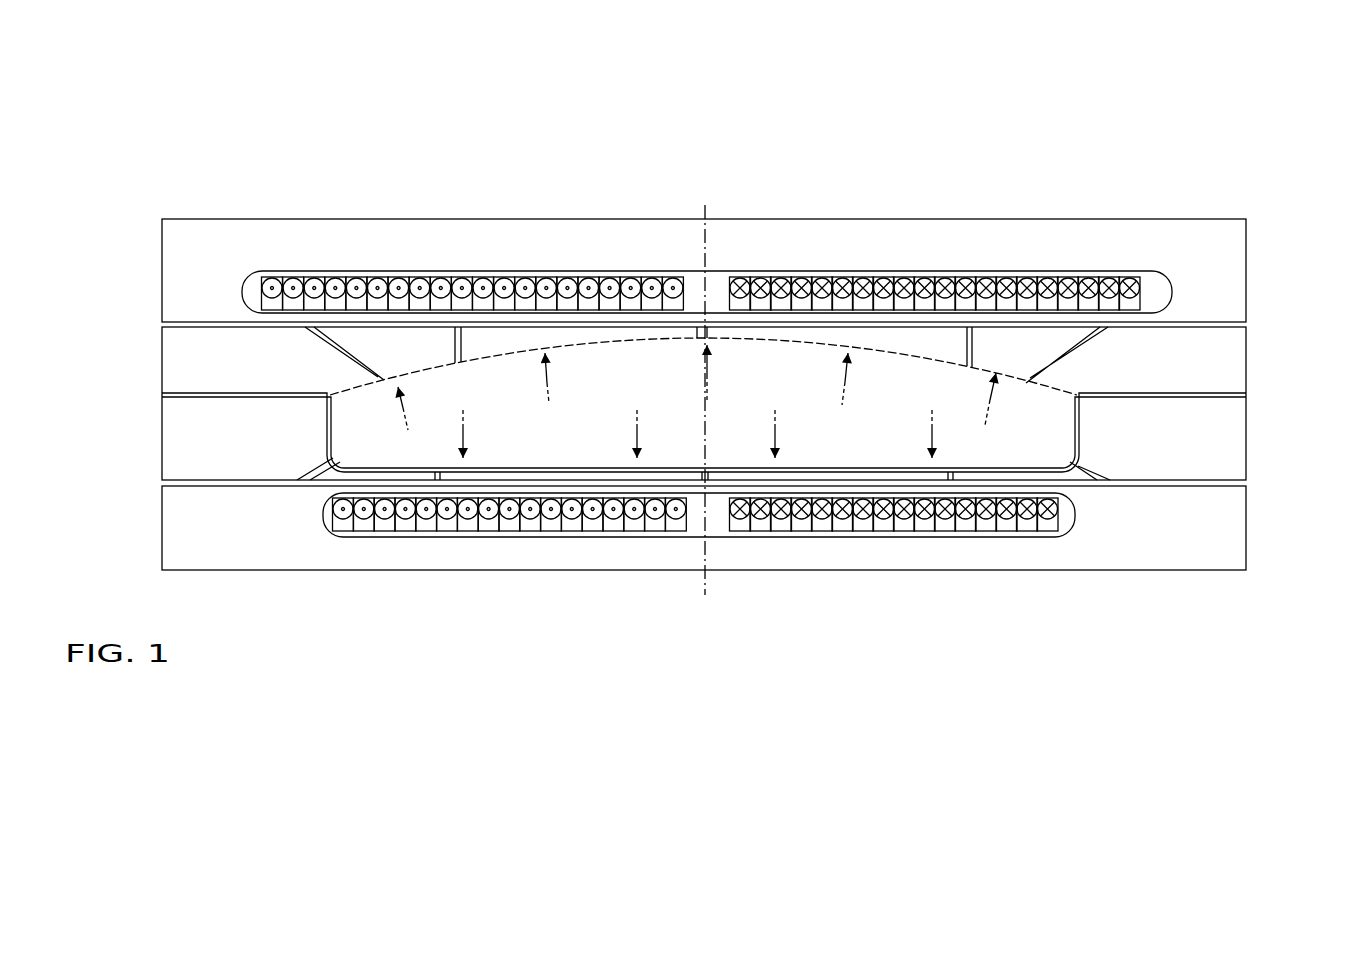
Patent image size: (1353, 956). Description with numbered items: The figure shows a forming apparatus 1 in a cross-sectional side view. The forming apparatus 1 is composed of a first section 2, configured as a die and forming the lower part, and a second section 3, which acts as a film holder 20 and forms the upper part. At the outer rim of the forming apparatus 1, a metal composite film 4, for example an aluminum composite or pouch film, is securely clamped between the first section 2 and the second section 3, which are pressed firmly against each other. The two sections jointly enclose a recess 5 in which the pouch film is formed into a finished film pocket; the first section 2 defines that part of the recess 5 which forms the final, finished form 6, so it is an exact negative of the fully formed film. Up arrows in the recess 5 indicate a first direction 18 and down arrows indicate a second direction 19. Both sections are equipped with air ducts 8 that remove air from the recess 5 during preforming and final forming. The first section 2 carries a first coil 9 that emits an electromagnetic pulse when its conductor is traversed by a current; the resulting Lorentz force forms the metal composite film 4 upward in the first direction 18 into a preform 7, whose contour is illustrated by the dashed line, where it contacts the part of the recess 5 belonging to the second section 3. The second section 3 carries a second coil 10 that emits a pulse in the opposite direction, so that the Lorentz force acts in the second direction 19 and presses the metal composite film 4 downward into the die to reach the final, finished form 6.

The forming apparatus 1 is at (1285, 142).
The first section 2 is at (1222, 505).
The second section 3 is at (1222, 255).
The metal composite film 4 is at (1222, 393).
The recess 5 is at (875, 455).
The final, finished form 6 is at (393, 467).
The preform 7 is at (648, 340).
The air ducts 8 is at (181, 325).
The first coil 9 is at (966, 525).
The second coil 10 is at (893, 276).
The first direction 18 is at (403, 408).
The second direction 19 is at (463, 428).
The film holder 20 is at (1187, 237).